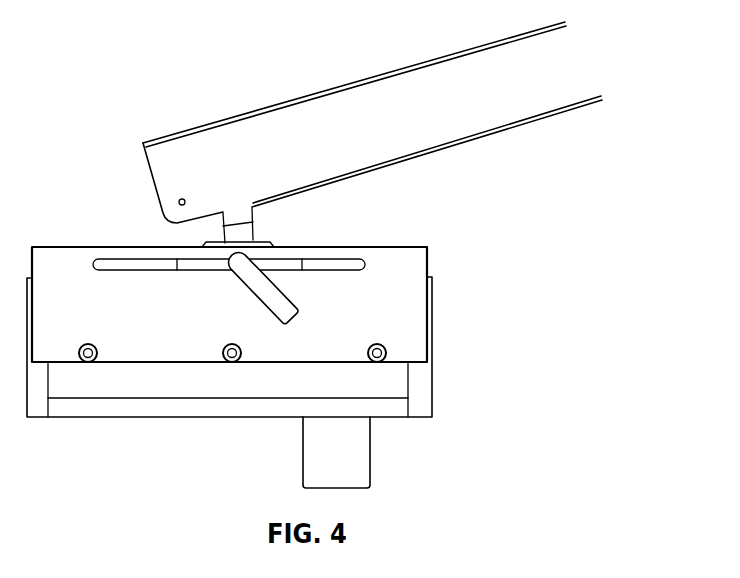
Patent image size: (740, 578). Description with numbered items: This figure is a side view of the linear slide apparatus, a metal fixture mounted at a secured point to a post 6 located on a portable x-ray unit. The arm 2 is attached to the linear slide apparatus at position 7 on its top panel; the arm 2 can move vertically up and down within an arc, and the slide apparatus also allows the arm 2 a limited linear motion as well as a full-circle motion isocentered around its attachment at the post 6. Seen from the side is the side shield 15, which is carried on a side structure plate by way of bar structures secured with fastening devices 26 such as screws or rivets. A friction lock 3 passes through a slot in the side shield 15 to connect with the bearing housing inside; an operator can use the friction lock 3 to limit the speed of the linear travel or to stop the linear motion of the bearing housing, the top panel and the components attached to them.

The arm 2 is at (335, 158).
The position 7 is at (255, 233).
The friction lock 3 is at (283, 295).
The side shield 15 is at (393, 338).
The post 6 is at (370, 465).
The fastening devices 26 is at (377, 362).